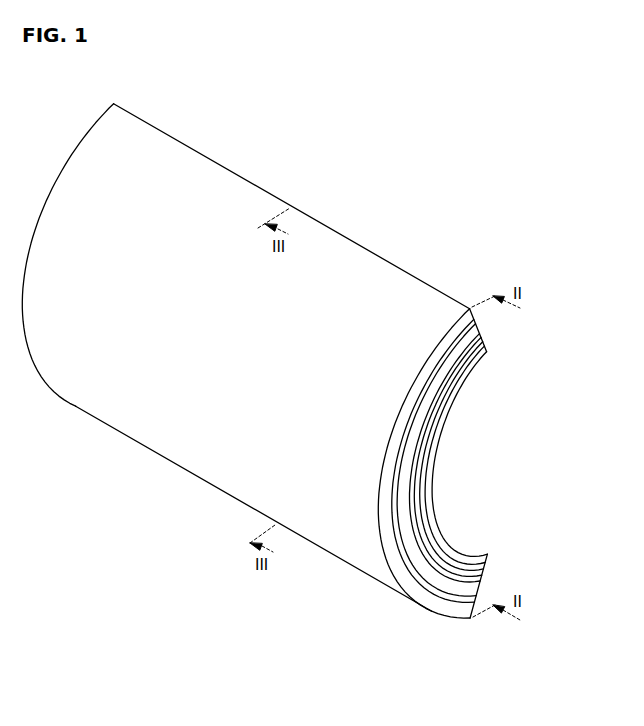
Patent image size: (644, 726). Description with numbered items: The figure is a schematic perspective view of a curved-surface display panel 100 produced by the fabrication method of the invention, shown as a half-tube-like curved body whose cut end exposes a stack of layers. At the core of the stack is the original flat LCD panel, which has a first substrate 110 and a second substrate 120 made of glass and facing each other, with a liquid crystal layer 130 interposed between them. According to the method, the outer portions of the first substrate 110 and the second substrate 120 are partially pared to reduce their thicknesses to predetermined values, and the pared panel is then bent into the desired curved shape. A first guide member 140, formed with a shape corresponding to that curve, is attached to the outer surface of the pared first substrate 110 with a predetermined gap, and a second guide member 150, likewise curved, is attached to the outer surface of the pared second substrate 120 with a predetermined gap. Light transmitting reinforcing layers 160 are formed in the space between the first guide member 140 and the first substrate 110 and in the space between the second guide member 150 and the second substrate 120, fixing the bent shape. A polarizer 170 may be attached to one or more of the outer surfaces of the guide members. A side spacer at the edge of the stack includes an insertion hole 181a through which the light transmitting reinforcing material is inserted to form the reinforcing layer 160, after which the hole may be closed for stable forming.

The curved-surface display panel 100 is at (55, 120).
The first substrate 110 is at (493, 573).
The second substrate 120 is at (478, 328).
The liquid crystal layer 130 is at (488, 358).
The first guide member 140 is at (492, 560).
The second guide member 150 is at (471, 620).
The light transmitting reinforcing layer 160 is at (421, 490).
The polarizer 170 is at (454, 321).
The insertion hole 181a is at (430, 520).